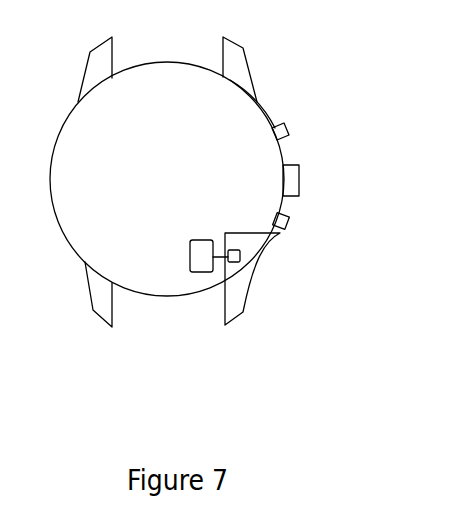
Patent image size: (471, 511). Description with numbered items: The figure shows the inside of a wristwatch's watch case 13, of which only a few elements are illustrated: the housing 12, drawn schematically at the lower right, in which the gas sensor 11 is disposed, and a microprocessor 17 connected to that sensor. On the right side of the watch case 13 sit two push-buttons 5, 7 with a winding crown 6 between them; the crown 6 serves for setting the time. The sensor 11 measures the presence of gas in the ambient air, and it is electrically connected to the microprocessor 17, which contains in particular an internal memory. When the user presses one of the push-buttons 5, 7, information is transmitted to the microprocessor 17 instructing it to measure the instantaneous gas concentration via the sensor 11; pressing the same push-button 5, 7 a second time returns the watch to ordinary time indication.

The watch case 13 is at (260, 108).
The push-button 5 is at (286, 126).
The winding crown 6 is at (299, 175).
The push-button 7 is at (289, 222).
The housing 12 is at (253, 244).
The sensor 11 is at (239, 260).
The microprocessor 17 is at (203, 260).